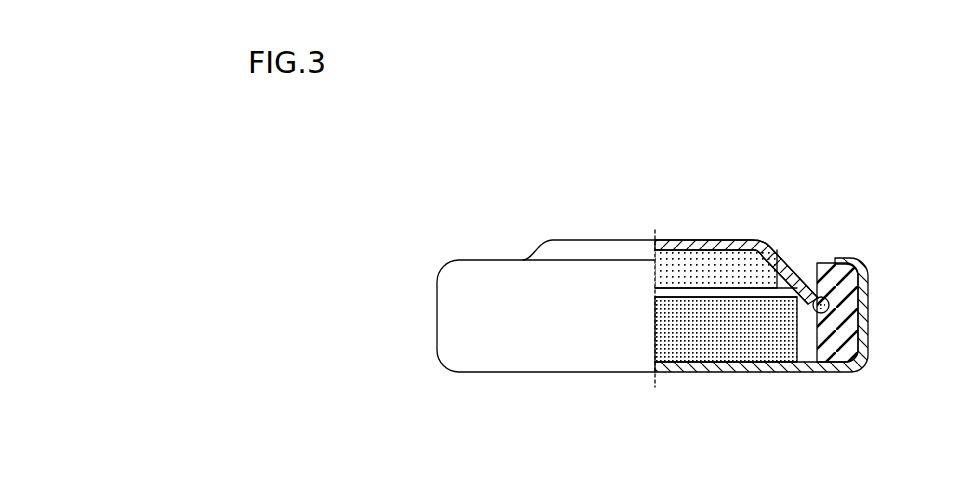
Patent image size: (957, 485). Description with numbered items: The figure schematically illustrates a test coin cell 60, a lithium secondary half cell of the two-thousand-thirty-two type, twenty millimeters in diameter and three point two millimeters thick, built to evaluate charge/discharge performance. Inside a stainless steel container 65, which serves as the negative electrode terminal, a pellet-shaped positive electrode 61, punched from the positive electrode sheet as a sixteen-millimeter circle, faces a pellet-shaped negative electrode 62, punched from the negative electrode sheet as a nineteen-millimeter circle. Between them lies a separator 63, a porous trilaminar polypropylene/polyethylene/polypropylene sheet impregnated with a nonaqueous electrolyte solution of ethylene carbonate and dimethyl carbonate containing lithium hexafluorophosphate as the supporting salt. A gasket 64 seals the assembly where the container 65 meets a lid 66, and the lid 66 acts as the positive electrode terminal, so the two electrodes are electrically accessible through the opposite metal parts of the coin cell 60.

The coin cell 60 is at (861, 209).
The positive electrode 61 is at (704, 256).
The negative electrode 62 is at (738, 355).
The separator 63 is at (755, 287).
The gasket 64 is at (866, 289).
The container 65 is at (578, 352).
The lid 66 is at (594, 239).